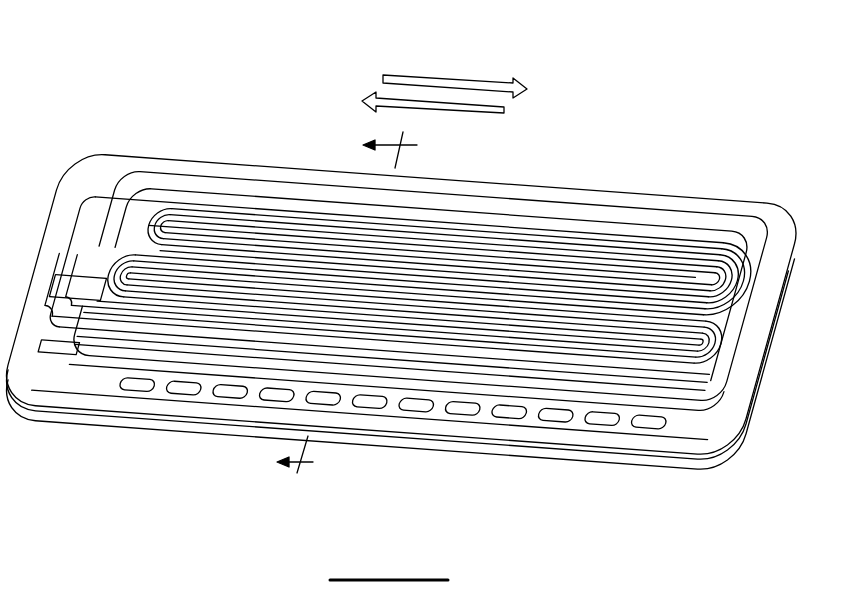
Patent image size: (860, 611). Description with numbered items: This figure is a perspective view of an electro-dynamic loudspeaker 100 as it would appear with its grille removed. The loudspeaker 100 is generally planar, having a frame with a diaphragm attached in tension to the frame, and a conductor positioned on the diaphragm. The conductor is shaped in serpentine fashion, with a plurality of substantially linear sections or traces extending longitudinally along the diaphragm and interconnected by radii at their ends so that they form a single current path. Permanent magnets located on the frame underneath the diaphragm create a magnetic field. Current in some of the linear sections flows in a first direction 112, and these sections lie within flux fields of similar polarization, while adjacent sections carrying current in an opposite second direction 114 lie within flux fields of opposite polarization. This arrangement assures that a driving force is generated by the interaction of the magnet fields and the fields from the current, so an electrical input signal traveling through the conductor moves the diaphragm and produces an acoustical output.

The electro-dynamic loudspeaker 100 is at (628, 134).
The first direction 112 is at (464, 80).
The second direction 114 is at (500, 110).